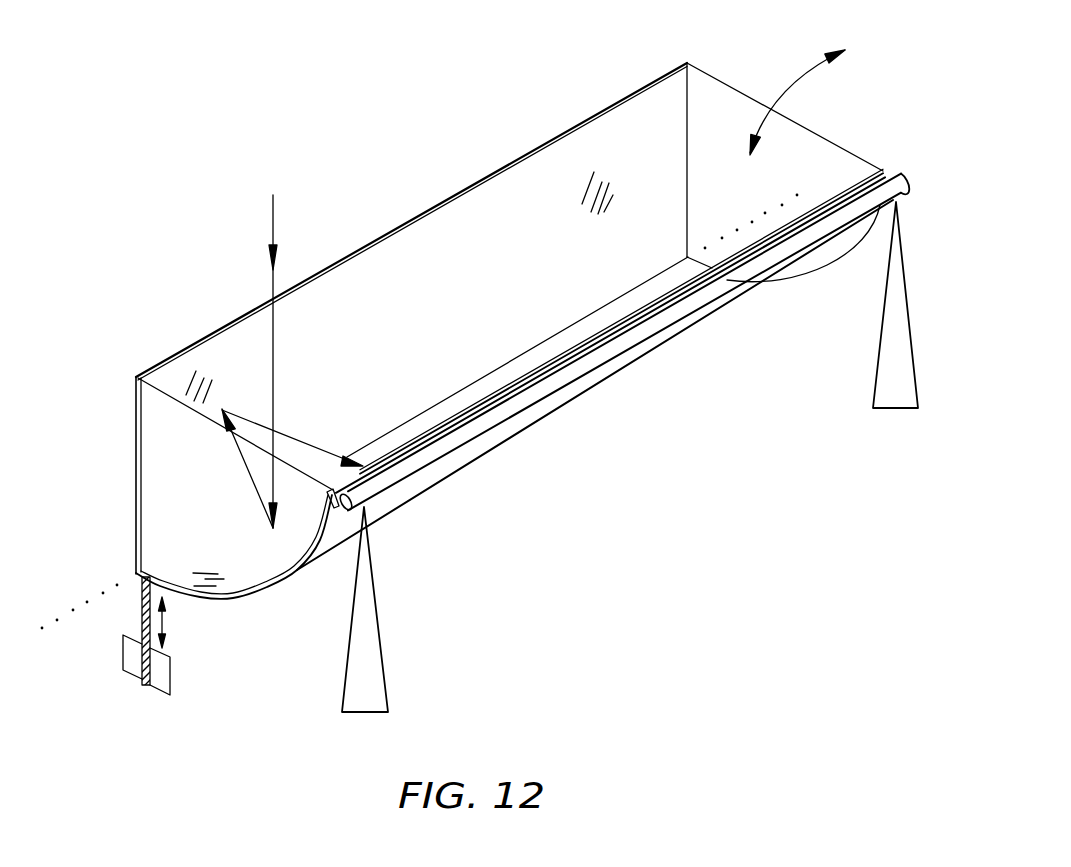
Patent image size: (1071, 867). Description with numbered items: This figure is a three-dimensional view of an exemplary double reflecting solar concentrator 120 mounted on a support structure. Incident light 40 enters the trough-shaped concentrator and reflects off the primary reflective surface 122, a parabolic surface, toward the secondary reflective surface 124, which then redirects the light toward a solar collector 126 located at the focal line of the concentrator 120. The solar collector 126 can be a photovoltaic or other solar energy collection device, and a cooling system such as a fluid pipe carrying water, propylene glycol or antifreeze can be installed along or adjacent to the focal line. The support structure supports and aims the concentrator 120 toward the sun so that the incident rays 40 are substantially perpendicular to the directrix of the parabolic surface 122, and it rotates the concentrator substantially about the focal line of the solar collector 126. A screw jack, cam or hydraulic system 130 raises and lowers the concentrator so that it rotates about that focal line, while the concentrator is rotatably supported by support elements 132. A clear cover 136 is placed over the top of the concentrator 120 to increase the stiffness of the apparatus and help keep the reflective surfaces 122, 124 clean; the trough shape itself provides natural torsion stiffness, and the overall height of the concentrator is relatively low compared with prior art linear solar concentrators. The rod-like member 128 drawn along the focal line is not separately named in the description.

The solar concentrator 120 is at (167, 278).
The incident light 40 is at (273, 220).
The clear cover 136 is at (723, 83).
The solar collector 126 is at (880, 173).
The receiver tube 128 is at (483, 428).
The support elements 132 is at (373, 663).
The secondary reflective surface 124 is at (167, 473).
The primary reflective surface 122 is at (253, 590).
The screw jack, cam or hydraulic system 130 is at (137, 675).